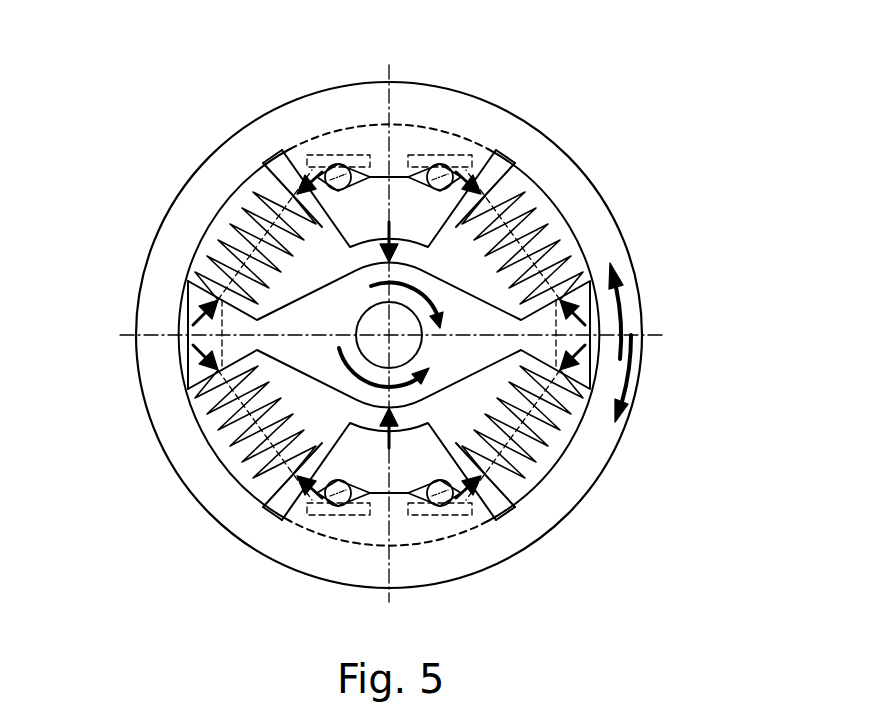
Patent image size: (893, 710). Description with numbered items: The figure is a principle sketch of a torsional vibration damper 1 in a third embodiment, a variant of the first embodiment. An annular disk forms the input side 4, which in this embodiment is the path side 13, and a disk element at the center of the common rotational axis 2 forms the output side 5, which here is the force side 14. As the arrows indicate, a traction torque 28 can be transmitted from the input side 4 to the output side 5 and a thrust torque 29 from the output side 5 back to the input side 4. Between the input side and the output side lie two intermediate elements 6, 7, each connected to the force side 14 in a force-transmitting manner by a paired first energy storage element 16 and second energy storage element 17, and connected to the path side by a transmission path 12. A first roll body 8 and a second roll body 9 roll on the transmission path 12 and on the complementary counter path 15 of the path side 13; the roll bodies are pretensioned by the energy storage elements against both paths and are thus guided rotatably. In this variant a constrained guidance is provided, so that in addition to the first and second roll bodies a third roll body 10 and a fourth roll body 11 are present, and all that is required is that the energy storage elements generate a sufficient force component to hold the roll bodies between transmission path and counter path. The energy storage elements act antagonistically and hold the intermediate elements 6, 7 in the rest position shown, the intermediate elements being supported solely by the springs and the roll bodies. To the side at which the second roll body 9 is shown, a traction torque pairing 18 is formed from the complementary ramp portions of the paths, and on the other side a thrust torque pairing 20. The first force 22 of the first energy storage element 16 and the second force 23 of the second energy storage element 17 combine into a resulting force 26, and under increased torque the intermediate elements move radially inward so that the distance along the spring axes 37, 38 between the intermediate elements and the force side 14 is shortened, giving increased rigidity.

The torsional vibration damper 1 is at (614, 106).
The common rotational axis 2 is at (389, 335).
The input side 4 is at (336, 334).
The path side 13 is at (193, 193).
The output side 5 is at (468, 301).
The force side 14 is at (450, 295).
The first intermediate element 6 is at (280, 148).
The second intermediate element 7 is at (262, 508).
The first roll body 8 is at (340, 156).
The second roll body 9 is at (437, 512).
The third roll body 10 is at (466, 160).
The fourth roll body 11 is at (340, 512).
The transmission path 12 is at (317, 167).
The counter path 15 is at (322, 165).
The first energy storage element 16 is at (527, 193).
The second energy storage element 17 is at (213, 252).
The traction torque pairing 18 is at (473, 495).
The thrust torque pairing 20 is at (386, 484).
The first force 22 is at (260, 162).
The second force 23 is at (507, 153).
The resulting force 26 is at (376, 232).
The traction torque 28 is at (628, 348).
The thrust torque 29 is at (578, 362).
The spring axis 37 is at (560, 240).
The spring axis 38 is at (233, 228).